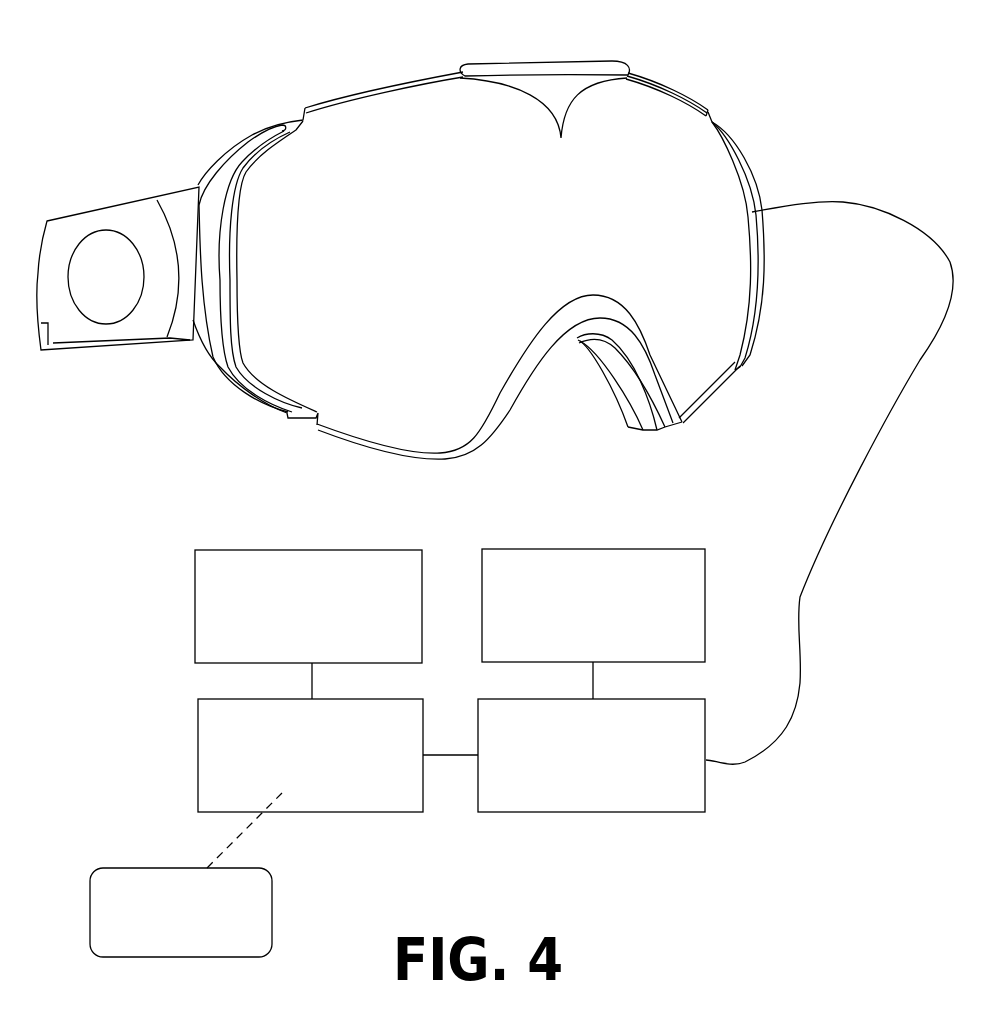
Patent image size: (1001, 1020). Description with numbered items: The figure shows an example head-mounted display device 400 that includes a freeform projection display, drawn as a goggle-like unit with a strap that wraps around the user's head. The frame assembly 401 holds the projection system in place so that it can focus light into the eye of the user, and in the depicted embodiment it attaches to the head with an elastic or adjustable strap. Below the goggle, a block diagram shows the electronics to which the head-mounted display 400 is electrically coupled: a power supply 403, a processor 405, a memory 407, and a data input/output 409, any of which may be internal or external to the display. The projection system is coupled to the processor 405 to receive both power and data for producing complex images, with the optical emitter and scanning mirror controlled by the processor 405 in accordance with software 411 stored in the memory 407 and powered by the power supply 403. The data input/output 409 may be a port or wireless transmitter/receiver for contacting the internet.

The head-mounted display device 400 is at (312, 38).
The frame assembly 401 is at (357, 138).
The power supply 403 is at (572, 632).
The processor 405 is at (572, 782).
The memory 407 is at (348, 767).
The data input/output 409 is at (340, 634).
The software 411 is at (158, 938).